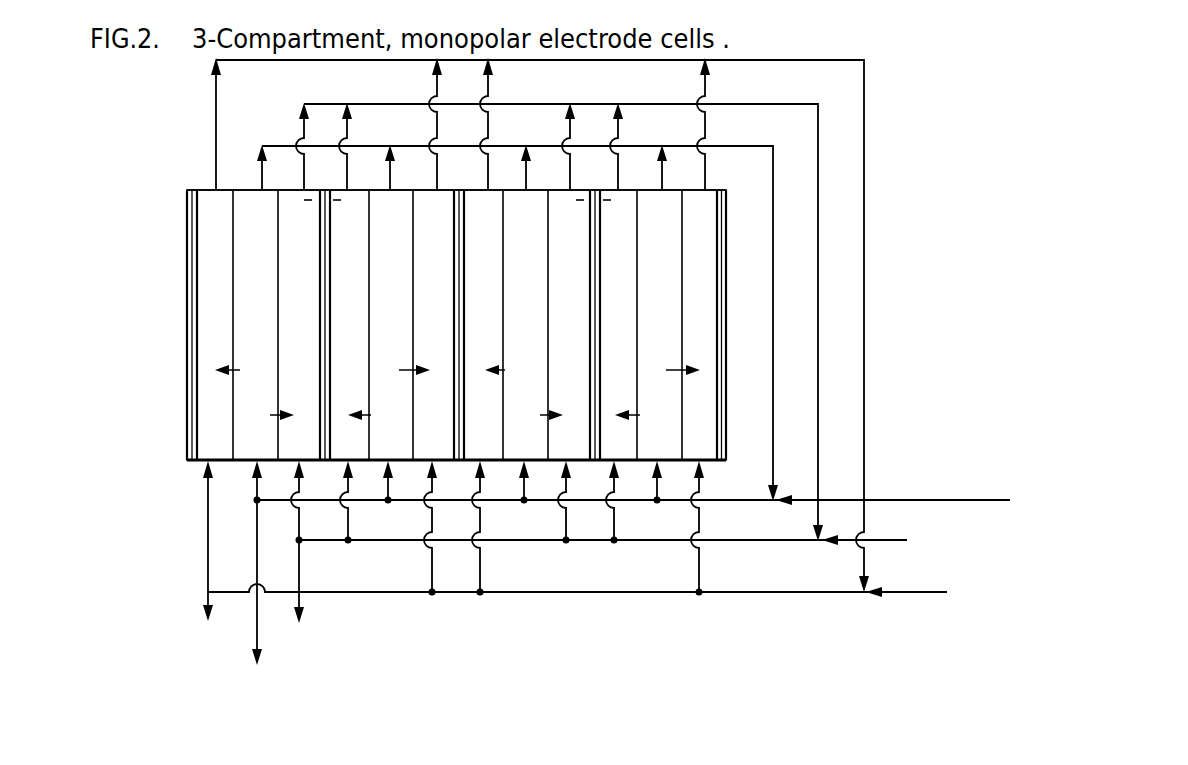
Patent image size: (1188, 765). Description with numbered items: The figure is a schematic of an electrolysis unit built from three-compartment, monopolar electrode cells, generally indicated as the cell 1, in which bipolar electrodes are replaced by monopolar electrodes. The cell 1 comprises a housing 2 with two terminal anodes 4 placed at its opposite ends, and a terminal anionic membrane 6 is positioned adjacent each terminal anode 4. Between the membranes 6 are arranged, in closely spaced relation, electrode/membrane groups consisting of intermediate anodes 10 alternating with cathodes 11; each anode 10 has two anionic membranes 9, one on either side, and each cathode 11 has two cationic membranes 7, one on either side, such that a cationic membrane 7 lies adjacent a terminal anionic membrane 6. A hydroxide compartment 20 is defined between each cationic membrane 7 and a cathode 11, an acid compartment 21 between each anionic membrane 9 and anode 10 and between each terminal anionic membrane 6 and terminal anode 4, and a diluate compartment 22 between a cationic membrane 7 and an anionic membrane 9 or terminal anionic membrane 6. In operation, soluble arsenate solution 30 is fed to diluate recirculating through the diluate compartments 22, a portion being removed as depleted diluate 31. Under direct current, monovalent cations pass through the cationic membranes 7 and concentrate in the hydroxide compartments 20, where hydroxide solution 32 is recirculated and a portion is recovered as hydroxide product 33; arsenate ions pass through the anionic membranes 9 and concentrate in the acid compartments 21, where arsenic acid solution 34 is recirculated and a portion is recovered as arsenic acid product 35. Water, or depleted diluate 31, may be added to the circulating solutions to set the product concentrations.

The cell 1 is at (176, 422).
The housing 2 is at (199, 188).
The terminal anode 4 is at (187, 263).
The terminal anionic membrane 6 is at (234, 300).
The cationic membrane 7 is at (279, 302).
The anionic membrane 9 is at (416, 290).
The anode 10 is at (465, 286).
The cathode 11 is at (333, 234).
The hydroxide compartment 20 is at (461, 278).
The acid compartment 21 is at (460, 275).
The diluate compartment 22 is at (457, 364).
The soluble arsenate solution 30 is at (691, 505).
The depleted diluate 31 is at (613, 596).
The hydroxide solution 32 is at (640, 549).
The hydroxide product 33 is at (411, 596).
The arsenic acid solution 34 is at (577, 602).
The arsenic acid product 35 is at (121, 621).